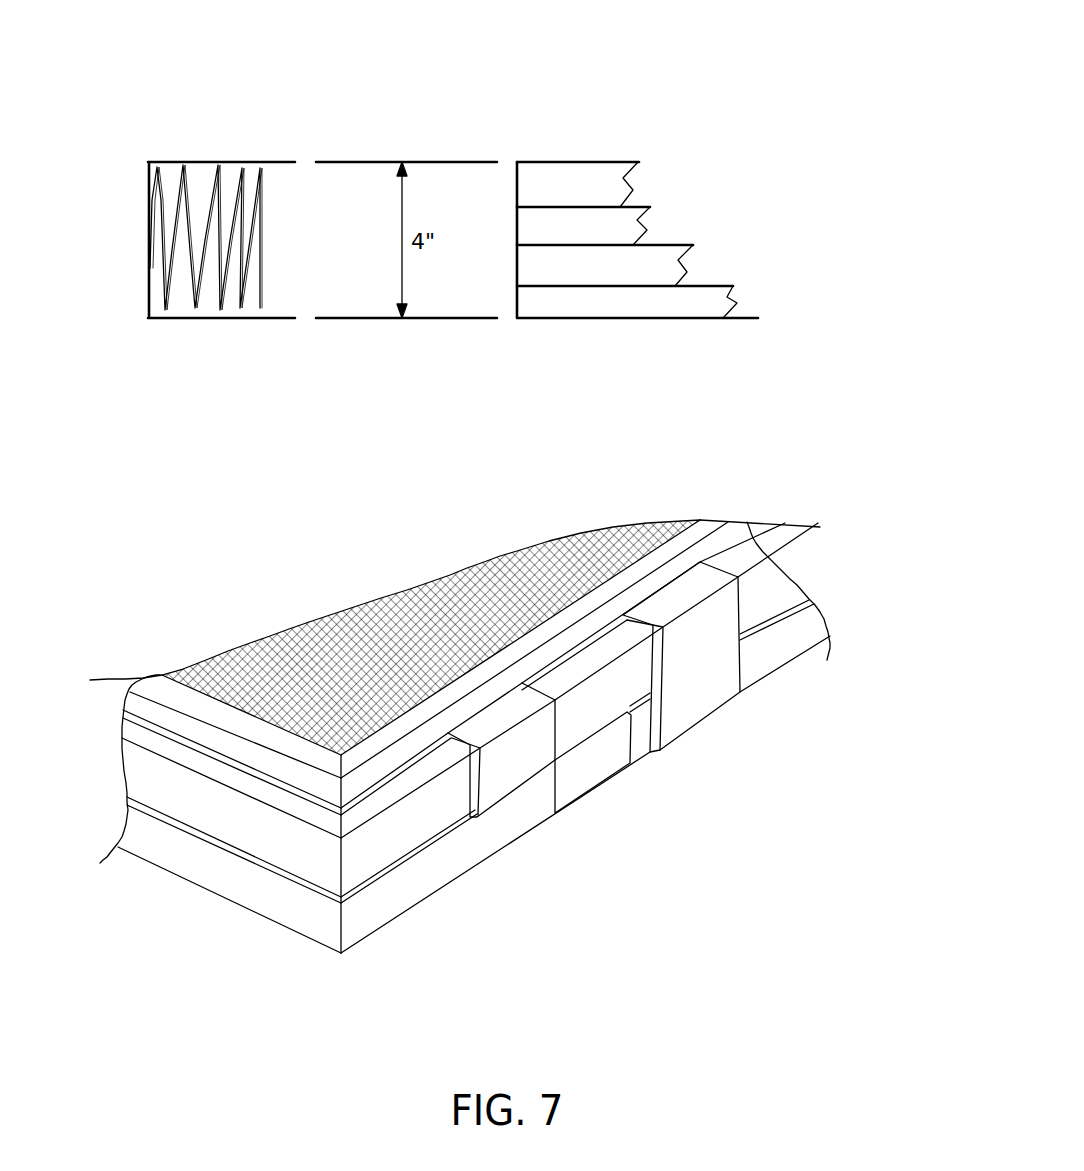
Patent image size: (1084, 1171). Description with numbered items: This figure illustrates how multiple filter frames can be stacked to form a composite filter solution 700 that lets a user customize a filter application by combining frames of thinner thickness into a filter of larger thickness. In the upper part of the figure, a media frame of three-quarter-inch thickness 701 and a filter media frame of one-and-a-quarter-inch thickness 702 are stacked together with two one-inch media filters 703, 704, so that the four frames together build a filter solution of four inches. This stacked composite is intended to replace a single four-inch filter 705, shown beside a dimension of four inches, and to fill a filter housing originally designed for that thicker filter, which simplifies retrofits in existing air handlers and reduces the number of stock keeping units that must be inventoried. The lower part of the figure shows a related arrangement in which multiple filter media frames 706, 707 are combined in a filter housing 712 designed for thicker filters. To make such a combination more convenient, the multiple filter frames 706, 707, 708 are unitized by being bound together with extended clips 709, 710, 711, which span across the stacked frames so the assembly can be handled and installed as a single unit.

The composite filter solution 700 is at (591, 108).
The media frame of 0.75 inch thickness 701 is at (698, 307).
The filter media frame of 1.25 inch thickness 702 is at (657, 267).
The media filter of 1.0 inch thickness 703 is at (617, 230).
The media filter of 1.0 inch thickness 704 is at (605, 192).
The single 4.0 inch filter 705 is at (207, 290).
The filter media frame 706 is at (803, 637).
The filter media frame 707 is at (762, 588).
The filter frame 708 is at (787, 528).
The extended clip 709 is at (681, 657).
The extended clip 710 is at (593, 762).
The extended clip 711 is at (501, 750).
The filter housing 712 is at (573, 615).